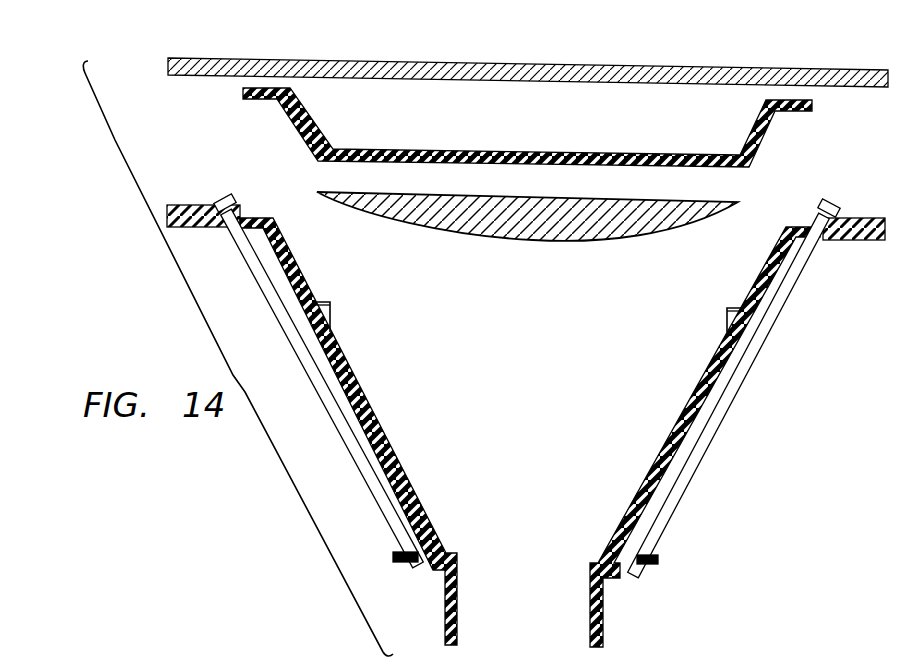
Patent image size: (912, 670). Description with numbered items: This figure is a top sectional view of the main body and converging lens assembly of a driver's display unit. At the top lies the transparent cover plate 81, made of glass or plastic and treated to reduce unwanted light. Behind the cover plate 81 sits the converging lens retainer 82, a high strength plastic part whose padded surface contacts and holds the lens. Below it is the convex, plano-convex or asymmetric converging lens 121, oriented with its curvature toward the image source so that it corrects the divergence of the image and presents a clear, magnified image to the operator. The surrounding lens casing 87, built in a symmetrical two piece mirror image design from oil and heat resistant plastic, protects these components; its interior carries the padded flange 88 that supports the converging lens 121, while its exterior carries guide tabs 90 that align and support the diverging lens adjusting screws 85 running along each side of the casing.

The cover plate 81 is at (625, 62).
The converging lens retainer 82 is at (750, 157).
The converging lens 121 is at (631, 232).
The diverging lens adjusting screws 85 is at (279, 318).
The lens casing 87 is at (387, 438).
The padded flange 88 is at (330, 322).
The guide tabs 90 is at (393, 559).